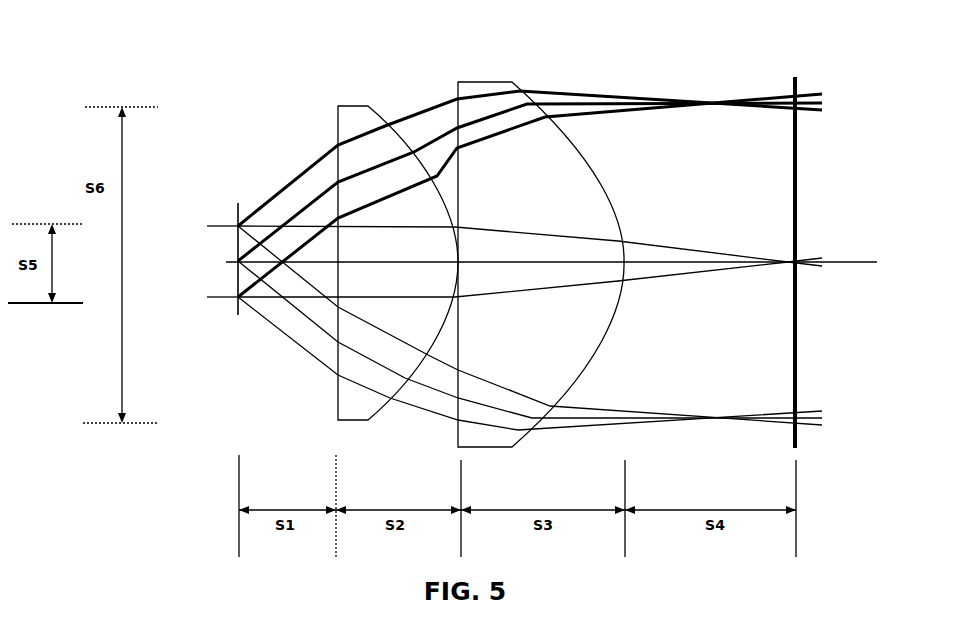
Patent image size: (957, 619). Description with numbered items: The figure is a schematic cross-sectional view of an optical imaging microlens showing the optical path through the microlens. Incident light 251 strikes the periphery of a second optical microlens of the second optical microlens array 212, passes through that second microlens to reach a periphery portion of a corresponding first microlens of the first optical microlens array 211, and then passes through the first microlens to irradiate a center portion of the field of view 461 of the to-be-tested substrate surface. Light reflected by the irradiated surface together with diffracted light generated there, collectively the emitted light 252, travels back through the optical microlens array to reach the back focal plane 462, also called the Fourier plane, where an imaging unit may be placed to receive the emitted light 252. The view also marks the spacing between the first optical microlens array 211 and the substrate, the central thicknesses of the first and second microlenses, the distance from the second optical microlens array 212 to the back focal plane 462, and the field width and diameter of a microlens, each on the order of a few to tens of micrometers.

The field of view 461 is at (237, 222).
The back focal plane 462 is at (798, 200).
The first optical microlens array 211 is at (345, 104).
The second optical microlens array 212 is at (462, 88).
The incident light 251 is at (728, 98).
The emitted light 252 is at (738, 267).